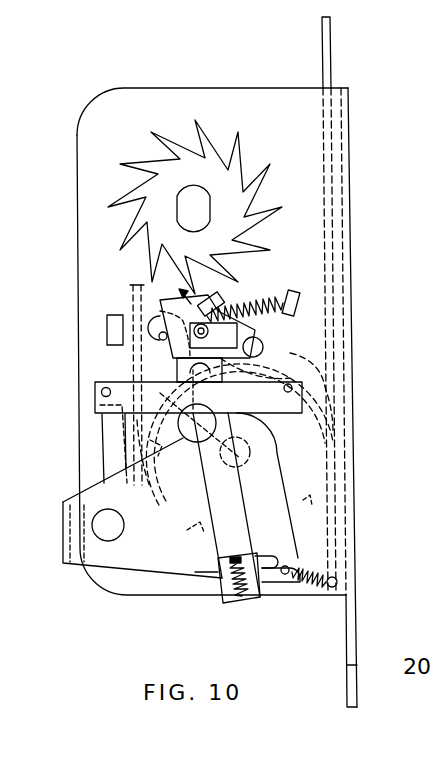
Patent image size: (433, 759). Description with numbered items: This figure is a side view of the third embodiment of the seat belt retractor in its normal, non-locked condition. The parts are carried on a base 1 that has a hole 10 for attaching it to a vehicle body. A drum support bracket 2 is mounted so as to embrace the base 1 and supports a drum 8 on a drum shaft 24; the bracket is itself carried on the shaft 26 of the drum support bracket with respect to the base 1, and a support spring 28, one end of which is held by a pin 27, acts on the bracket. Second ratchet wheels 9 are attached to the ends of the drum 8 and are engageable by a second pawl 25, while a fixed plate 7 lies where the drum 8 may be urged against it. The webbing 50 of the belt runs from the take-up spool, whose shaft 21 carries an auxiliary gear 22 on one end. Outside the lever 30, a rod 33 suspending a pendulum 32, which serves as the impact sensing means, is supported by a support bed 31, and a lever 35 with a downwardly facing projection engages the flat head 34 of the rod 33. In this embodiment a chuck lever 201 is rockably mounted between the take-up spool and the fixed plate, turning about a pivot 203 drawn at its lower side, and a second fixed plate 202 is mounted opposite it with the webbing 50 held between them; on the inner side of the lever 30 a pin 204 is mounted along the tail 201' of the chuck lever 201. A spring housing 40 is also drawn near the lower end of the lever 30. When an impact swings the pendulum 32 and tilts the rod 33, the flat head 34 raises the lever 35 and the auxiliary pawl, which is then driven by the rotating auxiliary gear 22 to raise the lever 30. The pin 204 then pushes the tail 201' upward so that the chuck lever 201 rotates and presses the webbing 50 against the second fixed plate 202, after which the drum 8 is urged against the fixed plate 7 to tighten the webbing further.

The base 1 is at (147, 93).
The drum support bracket 2 is at (62, 552).
The fixed plate 7 is at (107, 439).
The drum 8 is at (315, 386).
The second ratchet wheels 9 is at (297, 523).
The hole 10 is at (352, 642).
The shaft of the take-up spool 21 is at (210, 210).
The auxiliary gear 22 is at (240, 157).
The drum shaft 24 is at (250, 455).
The second pawl 25 is at (272, 582).
The shaft of the drum support bracket 26 is at (113, 538).
The pin 27 is at (338, 581).
The support spring 28 is at (314, 583).
The lever 30 is at (240, 478).
The support bed 31 is at (286, 413).
The pendulum 32 is at (190, 441).
The rod 33 is at (142, 452).
The flat head 34 is at (178, 372).
The lever 35 is at (237, 385).
The spring housing 40 is at (224, 590).
The webbing 50 is at (330, 47).
The chuck lever 201 is at (169, 310).
The tail of the chuck lever 201' is at (245, 290).
The second fixed plate 202 is at (110, 330).
The pivot 203 is at (160, 338).
The pin 204 is at (245, 333).